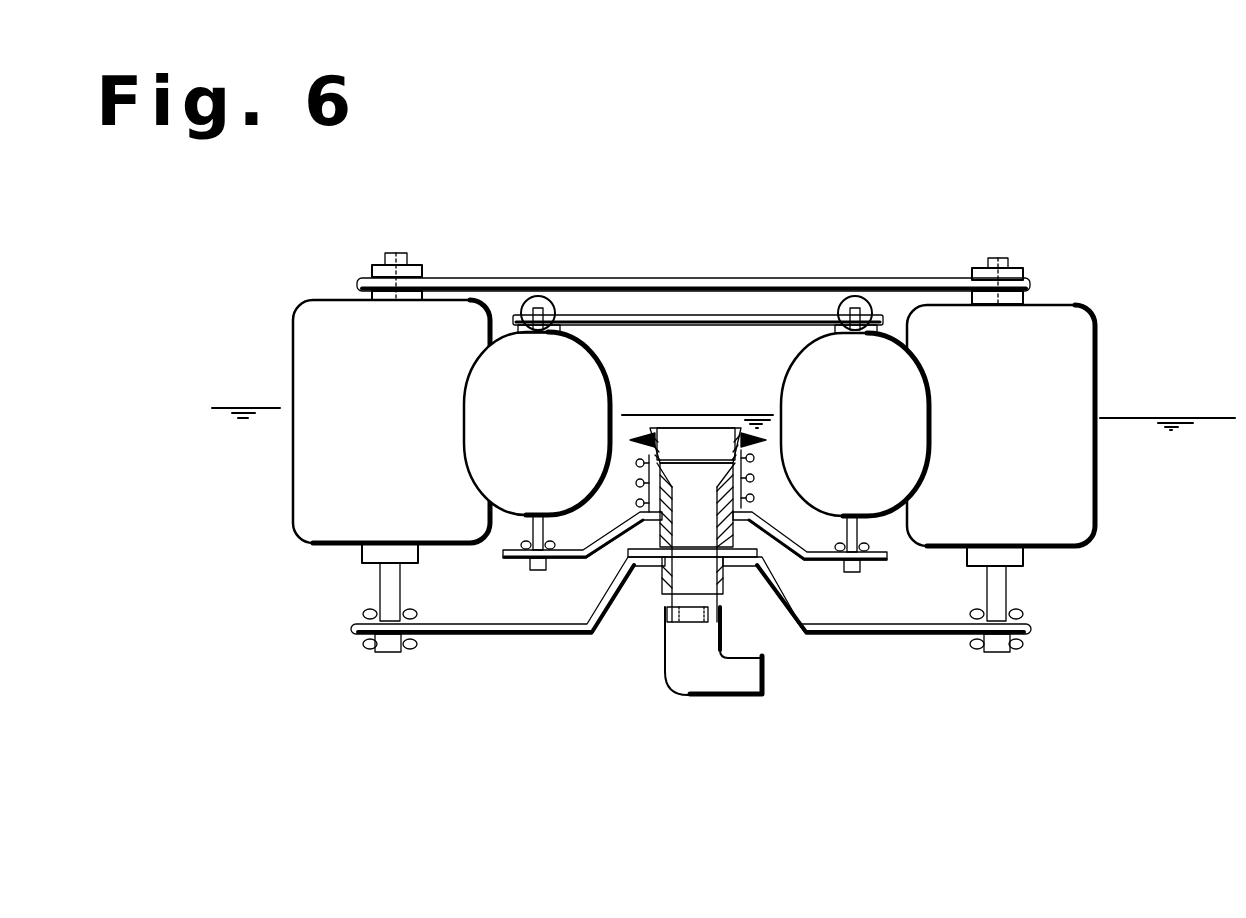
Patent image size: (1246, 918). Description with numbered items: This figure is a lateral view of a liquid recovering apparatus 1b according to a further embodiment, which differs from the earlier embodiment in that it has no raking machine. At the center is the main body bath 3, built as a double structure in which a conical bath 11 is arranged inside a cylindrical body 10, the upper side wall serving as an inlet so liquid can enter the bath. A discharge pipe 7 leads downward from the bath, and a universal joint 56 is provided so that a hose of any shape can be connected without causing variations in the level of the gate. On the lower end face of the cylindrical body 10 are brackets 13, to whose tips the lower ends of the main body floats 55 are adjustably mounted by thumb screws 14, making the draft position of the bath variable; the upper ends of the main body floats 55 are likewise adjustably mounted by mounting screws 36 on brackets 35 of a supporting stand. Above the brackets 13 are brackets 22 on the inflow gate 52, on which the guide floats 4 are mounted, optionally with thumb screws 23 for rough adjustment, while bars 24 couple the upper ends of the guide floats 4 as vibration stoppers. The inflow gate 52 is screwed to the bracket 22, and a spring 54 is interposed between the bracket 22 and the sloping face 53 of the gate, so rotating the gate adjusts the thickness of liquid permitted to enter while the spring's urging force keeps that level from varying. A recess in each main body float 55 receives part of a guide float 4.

The liquid recovering apparatus 1b is at (656, 242).
The main body bath 3 is at (623, 727).
The guide float 4 is at (886, 505).
The discharge pipe 7 is at (738, 580).
The cylindrical body 10 is at (665, 475).
The conical bath 11 is at (665, 620).
The bracket 13 is at (940, 638).
The thumb screw 14 is at (365, 650).
The bracket 22 is at (815, 560).
The thumb screw 23 is at (512, 549).
The bar 24 is at (762, 316).
The bracket 35 is at (900, 277).
The mounting screw 36 is at (1040, 283).
The inflow gate 52 is at (716, 422).
The sloping face 53 is at (650, 427).
The spring 54 is at (545, 519).
The main body float 55 is at (313, 360).
The universal joint 56 is at (728, 683).